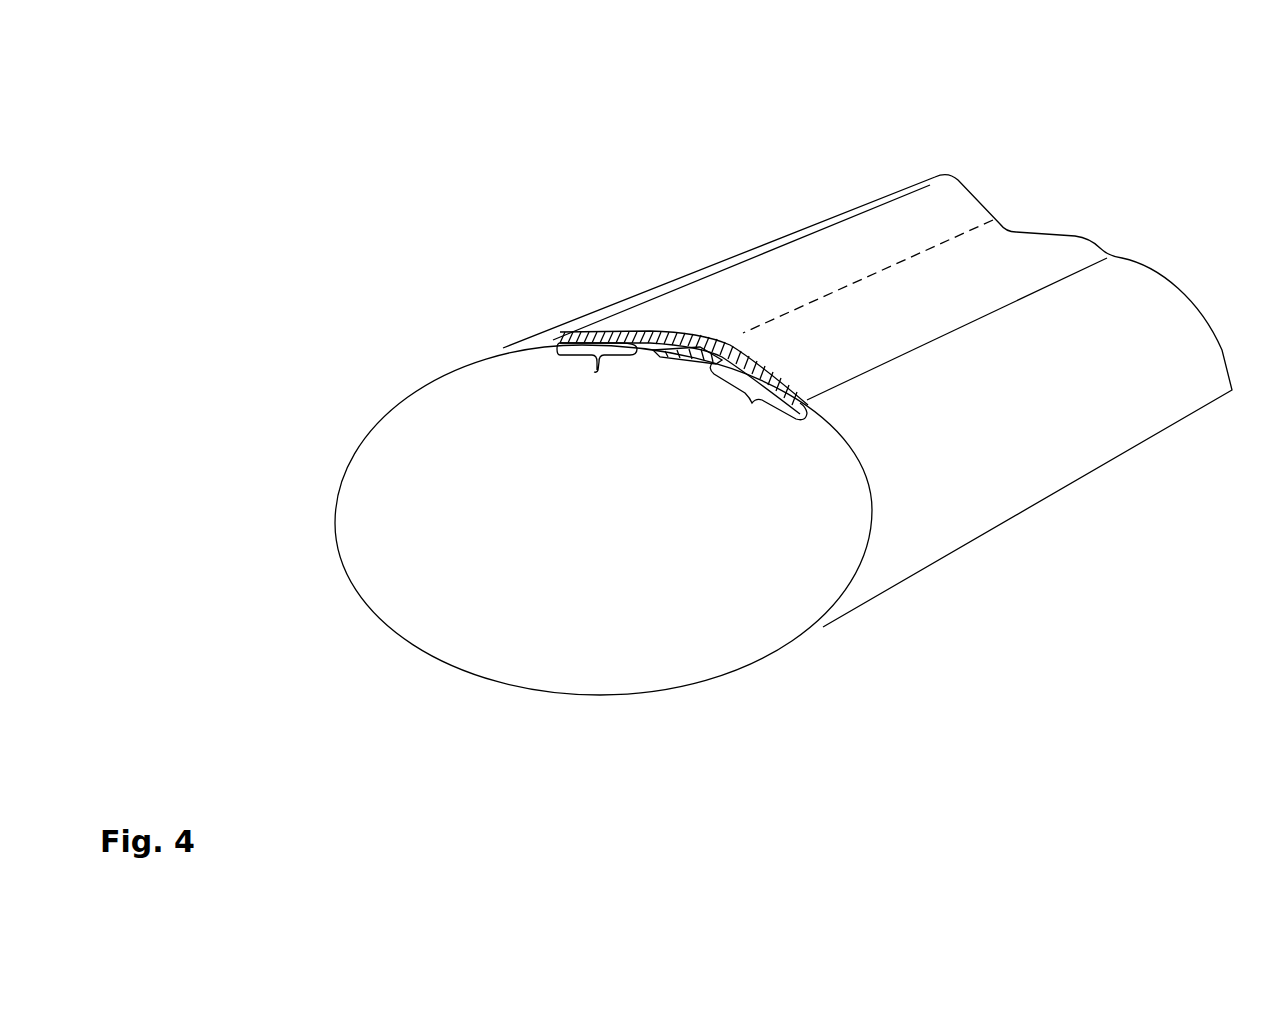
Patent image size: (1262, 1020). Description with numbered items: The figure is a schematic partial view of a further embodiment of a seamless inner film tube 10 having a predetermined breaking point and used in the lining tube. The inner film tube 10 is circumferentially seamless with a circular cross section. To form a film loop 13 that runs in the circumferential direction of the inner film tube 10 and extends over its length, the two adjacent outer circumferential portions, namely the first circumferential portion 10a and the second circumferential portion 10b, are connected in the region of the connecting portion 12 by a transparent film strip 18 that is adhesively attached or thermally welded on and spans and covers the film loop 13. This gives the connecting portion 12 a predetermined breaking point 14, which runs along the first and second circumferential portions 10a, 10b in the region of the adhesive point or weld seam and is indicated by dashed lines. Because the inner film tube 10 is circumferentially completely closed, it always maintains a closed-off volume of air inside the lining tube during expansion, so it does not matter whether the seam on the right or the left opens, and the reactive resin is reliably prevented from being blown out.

The inner film tube 10 is at (350, 463).
The first circumferential portion of the inner film tube 10a is at (597, 372).
The second circumferential portion of the inner film tube 10b is at (752, 403).
The connecting portion 12 is at (887, 235).
The film loop 13 is at (725, 337).
The predetermined breaking point 14 is at (843, 285).
The welded-on film strip 18 is at (680, 310).